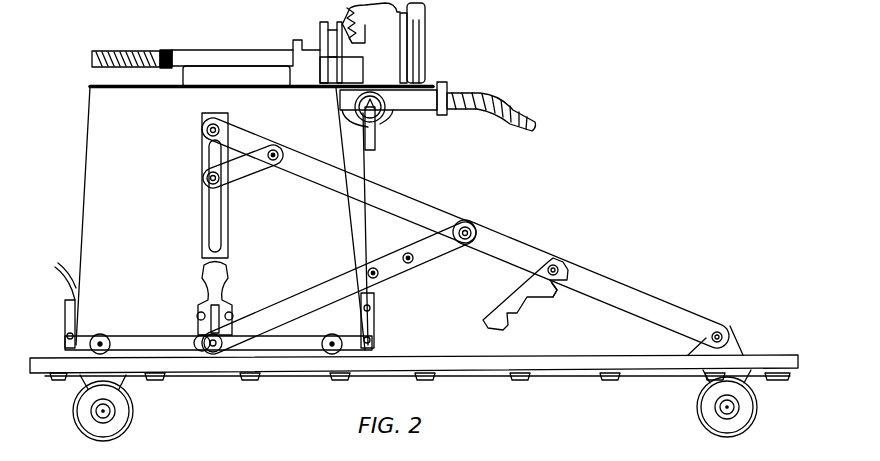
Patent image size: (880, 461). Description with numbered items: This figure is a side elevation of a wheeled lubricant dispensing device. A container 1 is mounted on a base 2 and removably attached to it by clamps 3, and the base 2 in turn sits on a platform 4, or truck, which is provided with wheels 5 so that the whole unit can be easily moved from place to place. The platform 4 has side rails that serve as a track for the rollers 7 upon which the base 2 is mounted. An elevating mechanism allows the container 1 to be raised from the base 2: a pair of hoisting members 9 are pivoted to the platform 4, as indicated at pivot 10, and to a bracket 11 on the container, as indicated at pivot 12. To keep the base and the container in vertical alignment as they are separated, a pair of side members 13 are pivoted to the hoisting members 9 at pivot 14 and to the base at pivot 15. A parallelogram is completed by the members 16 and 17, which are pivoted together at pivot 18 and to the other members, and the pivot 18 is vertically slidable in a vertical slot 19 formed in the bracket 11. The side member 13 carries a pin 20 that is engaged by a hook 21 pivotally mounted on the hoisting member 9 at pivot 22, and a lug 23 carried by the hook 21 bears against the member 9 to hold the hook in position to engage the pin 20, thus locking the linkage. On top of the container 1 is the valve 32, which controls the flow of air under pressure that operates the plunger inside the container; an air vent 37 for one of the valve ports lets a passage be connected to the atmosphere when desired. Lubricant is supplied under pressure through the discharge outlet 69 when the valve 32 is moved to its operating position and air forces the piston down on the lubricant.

The container 1 is at (86, 200).
The base 2 is at (163, 341).
The clamps 3 is at (60, 280).
The platform 4 is at (432, 357).
The wheels 5 is at (127, 410).
The rollers 7 is at (100, 334).
The hoisting members 9 is at (649, 300).
The pivot 10 is at (719, 333).
The bracket 11 is at (204, 157).
The pivot 12 is at (207, 129).
The side members 13 is at (313, 295).
The pivot 14 is at (470, 228).
The pivot 15 is at (216, 352).
The member 16 is at (290, 212).
The member 17 is at (248, 166).
The pivot 18 is at (207, 181).
The vertical slot 19 is at (213, 210).
The pin 20 is at (378, 275).
The hook 21 is at (519, 301).
The pivot 22 is at (561, 264).
The lug 23 is at (558, 298).
The valve 32 is at (382, 117).
The air vent 37 is at (425, 42).
The discharge outlet 69 is at (123, 50).